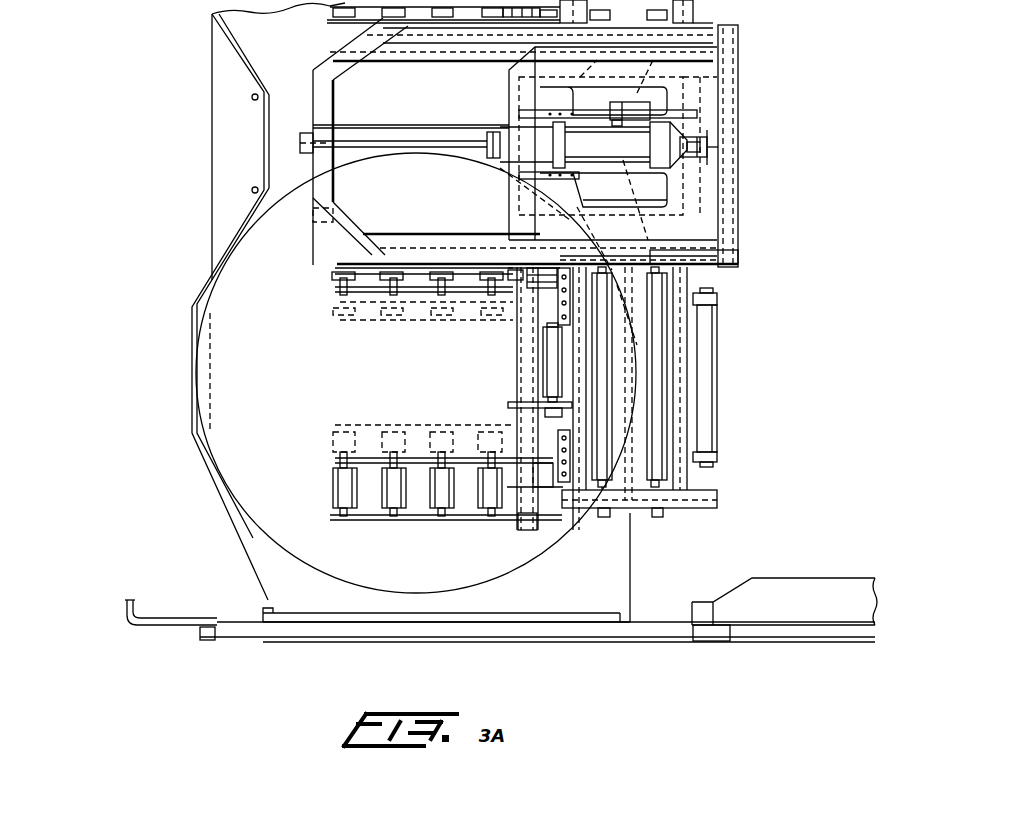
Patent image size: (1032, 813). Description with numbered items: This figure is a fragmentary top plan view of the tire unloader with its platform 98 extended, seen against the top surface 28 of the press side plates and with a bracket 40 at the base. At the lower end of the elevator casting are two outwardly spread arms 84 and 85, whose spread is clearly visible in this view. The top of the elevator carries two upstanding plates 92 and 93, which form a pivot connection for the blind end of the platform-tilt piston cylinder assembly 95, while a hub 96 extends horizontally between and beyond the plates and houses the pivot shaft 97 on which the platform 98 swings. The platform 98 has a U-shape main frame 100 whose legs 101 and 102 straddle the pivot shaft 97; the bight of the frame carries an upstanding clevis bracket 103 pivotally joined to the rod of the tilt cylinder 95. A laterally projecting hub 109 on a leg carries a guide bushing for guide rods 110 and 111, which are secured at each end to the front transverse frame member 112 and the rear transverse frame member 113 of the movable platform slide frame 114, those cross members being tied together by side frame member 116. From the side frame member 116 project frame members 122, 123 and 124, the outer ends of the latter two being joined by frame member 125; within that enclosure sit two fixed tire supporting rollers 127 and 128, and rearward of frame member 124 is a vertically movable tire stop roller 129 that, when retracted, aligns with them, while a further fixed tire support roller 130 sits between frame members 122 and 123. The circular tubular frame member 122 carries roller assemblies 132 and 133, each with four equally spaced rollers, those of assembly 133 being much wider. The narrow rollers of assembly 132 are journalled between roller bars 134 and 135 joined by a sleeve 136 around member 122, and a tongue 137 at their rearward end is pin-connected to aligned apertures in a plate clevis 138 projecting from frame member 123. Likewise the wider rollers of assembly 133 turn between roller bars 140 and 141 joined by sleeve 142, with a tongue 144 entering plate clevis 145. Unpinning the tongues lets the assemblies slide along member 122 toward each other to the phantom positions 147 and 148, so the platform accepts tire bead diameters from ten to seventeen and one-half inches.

The top surface of the side plates 28 is at (313, 640).
The hook bracket 40 is at (165, 630).
The outwardly spread arm 84 is at (650, 112).
The outwardly spread arm 85 is at (630, 198).
The upstanding plate 92 is at (590, 177).
The upstanding plate 93 is at (583, 105).
The platform-tilt piston cylinder assembly 95 is at (485, 150).
The hub 96 is at (507, 189).
The pivot shaft 97 is at (520, 100).
The platform 98 is at (745, 162).
The U-shape main frame 100 is at (700, 109).
The leg of the main frame 101 is at (625, 58).
The leg of the main frame 102 is at (717, 270).
The clevis bracket 103 is at (713, 128).
The laterally projecting hub 109 is at (713, 33).
The guide rod 110 is at (428, 65).
The guide rod 111 is at (387, 231).
The front transverse frame member 112 is at (317, 213).
The rear transverse frame member 113 is at (730, 197).
The movable platform slide frame 114 is at (742, 243).
The side frame member 116 is at (419, 257).
The laterally projecting frame member 122 is at (523, 365).
The laterally projecting frame member 123 is at (581, 512).
The laterally projecting frame member 124 is at (688, 477).
The frame member 125 is at (697, 508).
The fixed tire supporting roller 127 is at (627, 512).
The fixed tire supporting roller 128 is at (658, 330).
The vertically movable tire stop roller 129 is at (716, 373).
The fixed tire support roller 130 is at (546, 382).
The roller assembly 132 is at (332, 275).
The roller assembly 133 is at (332, 486).
The roller bar 134 is at (353, 264).
The roller bar 135 is at (365, 286).
The sleeve 136 is at (513, 280).
The tongue 137 is at (547, 263).
The plate clevis 138 is at (562, 308).
The roller bar 140 is at (415, 528).
The roller bar 141 is at (415, 460).
The sleeve 142 is at (523, 503).
The tongue 144 is at (597, 503).
The plate clevis 145 is at (560, 447).
The phantom line position 147 is at (332, 316).
The phantom line position 148 is at (332, 440).